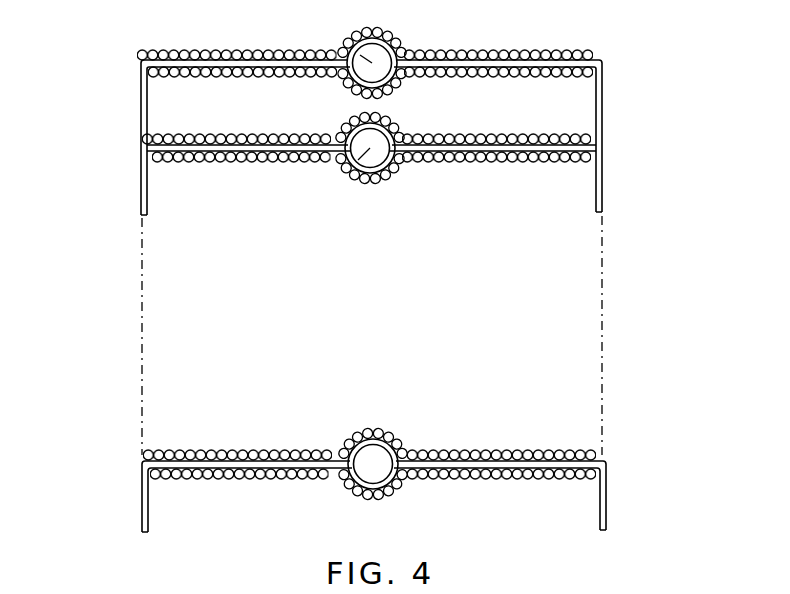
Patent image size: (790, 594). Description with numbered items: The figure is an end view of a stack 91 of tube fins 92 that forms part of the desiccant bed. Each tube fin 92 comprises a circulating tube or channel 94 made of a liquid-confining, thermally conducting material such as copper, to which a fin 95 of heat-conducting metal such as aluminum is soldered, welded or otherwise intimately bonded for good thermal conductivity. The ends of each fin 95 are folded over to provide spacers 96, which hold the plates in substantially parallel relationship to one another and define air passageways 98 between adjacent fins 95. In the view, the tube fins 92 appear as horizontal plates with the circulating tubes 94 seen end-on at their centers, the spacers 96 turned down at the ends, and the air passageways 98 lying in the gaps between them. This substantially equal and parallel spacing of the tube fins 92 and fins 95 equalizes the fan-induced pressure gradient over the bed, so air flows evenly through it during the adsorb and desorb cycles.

The stack 91 is at (642, 52).
The tube fin 92 is at (603, 55).
The circulating tube 94 is at (345, 45).
The fin 95 is at (468, 62).
The spacer 96 is at (603, 110).
The air passageway 98 is at (240, 115).